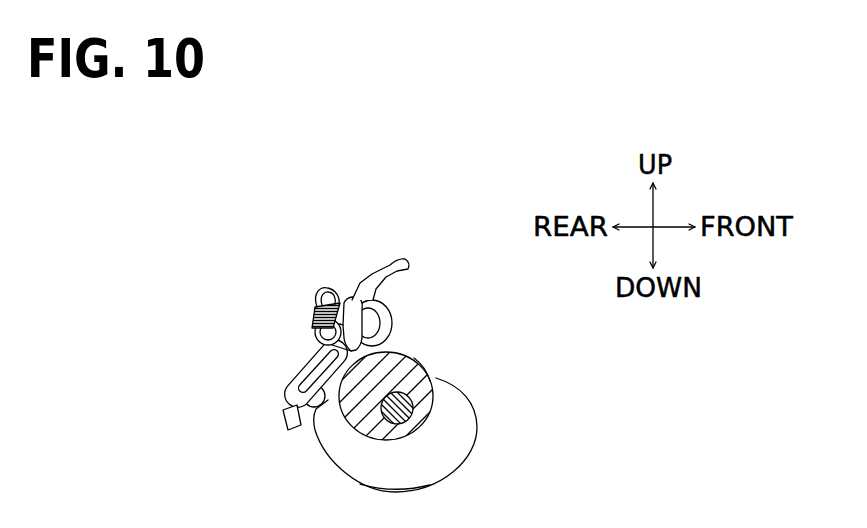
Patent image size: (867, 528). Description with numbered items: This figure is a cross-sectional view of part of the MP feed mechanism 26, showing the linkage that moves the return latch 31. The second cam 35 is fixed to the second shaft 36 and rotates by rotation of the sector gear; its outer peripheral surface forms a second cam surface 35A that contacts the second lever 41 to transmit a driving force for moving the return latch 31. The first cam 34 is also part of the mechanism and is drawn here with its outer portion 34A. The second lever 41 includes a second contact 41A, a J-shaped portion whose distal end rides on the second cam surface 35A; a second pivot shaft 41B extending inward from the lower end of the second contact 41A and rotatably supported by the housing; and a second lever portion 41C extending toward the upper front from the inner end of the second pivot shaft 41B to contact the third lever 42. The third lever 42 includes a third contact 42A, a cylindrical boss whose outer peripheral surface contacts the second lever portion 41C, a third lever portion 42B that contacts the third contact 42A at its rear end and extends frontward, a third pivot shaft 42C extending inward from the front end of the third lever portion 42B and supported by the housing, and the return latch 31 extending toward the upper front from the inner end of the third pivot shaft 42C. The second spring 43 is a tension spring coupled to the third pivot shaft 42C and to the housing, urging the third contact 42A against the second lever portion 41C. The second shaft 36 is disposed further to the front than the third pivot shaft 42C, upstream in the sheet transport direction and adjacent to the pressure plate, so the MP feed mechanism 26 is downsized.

The MP feed mechanism 26 is at (256, 231).
The return latch 31 is at (385, 265).
The first cam 34 is at (488, 427).
The base member outer edge 34A is at (446, 479).
The second cam 35 is at (410, 364).
The second cam surface 35A is at (430, 381).
The second shaft 36 is at (409, 398).
The second lever 41 is at (286, 383).
The second contact 41A is at (302, 369).
The second pivot shaft 41B is at (313, 422).
The second lever portion 41C is at (351, 297).
The third lever 42 is at (387, 298).
The third contact 42A is at (314, 333).
The third lever portion 42B is at (392, 309).
The third pivot shaft 42C is at (392, 322).
The second spring 43 is at (315, 308).